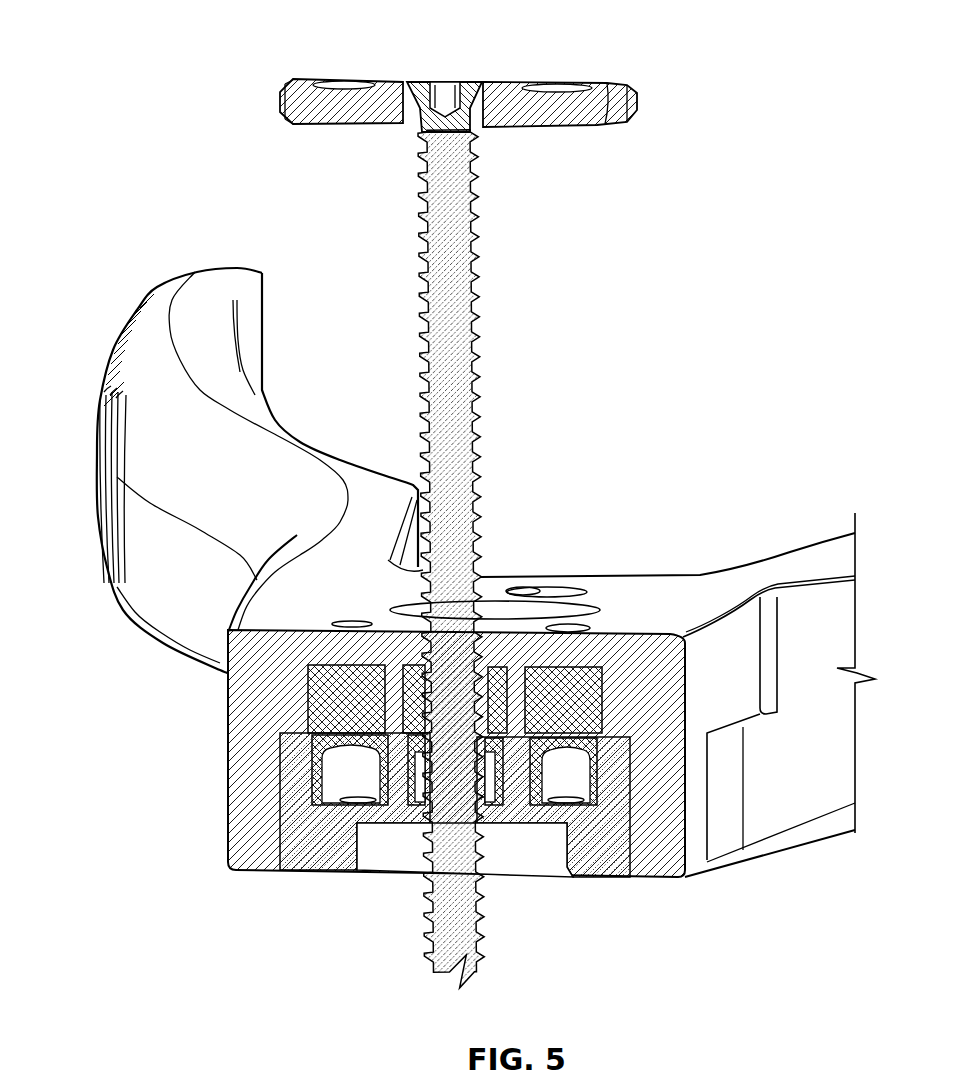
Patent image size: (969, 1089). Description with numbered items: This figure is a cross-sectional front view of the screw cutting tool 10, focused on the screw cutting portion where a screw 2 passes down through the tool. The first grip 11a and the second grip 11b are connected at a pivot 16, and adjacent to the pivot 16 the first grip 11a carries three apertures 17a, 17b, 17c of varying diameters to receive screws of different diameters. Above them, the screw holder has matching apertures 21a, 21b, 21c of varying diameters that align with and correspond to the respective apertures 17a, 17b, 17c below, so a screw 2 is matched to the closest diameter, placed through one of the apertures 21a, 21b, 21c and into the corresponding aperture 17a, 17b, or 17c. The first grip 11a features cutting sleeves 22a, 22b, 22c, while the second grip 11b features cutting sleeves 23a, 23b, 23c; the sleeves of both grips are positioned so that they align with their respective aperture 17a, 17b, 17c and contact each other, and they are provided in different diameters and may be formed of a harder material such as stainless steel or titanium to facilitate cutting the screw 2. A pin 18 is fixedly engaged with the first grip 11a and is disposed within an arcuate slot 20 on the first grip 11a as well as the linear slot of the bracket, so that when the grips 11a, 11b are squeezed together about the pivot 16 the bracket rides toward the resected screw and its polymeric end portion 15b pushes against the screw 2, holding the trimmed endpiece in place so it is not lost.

The screw cutting tool 10 is at (132, 140).
The screw 2 is at (462, 126).
The aperture of screw holder 21a is at (580, 93).
The aperture of screw holder 21b is at (410, 123).
The aperture of screw holder 21c is at (342, 83).
The first grip 11a is at (147, 332).
The second grip 11b is at (825, 558).
The pivot 16 is at (492, 608).
The pin 18 is at (523, 590).
The arcuate slot 20 is at (575, 590).
The aperture 17a is at (587, 630).
The aperture 17b is at (427, 630).
The aperture 17c is at (340, 628).
The cutting sleeve 22a is at (580, 705).
The cutting sleeve 22b is at (413, 710).
The cutting sleeve 22c is at (342, 707).
The cutting sleeve 23a is at (600, 785).
The cutting sleeve 23b is at (357, 823).
The cutting sleeve 23c is at (323, 785).
The polymeric end portion 15b is at (388, 853).